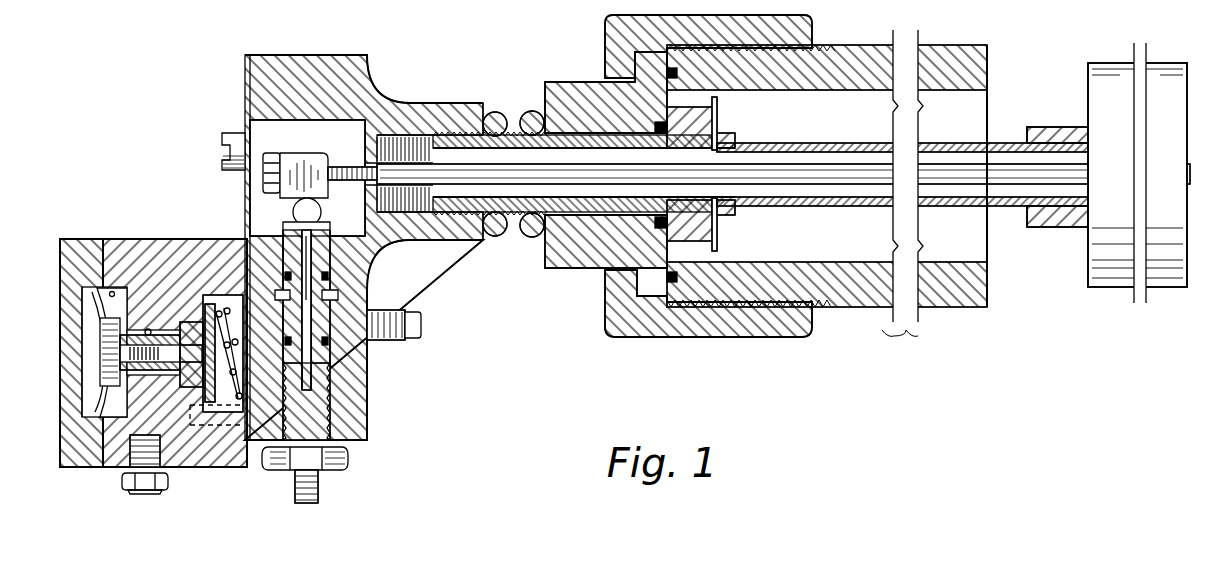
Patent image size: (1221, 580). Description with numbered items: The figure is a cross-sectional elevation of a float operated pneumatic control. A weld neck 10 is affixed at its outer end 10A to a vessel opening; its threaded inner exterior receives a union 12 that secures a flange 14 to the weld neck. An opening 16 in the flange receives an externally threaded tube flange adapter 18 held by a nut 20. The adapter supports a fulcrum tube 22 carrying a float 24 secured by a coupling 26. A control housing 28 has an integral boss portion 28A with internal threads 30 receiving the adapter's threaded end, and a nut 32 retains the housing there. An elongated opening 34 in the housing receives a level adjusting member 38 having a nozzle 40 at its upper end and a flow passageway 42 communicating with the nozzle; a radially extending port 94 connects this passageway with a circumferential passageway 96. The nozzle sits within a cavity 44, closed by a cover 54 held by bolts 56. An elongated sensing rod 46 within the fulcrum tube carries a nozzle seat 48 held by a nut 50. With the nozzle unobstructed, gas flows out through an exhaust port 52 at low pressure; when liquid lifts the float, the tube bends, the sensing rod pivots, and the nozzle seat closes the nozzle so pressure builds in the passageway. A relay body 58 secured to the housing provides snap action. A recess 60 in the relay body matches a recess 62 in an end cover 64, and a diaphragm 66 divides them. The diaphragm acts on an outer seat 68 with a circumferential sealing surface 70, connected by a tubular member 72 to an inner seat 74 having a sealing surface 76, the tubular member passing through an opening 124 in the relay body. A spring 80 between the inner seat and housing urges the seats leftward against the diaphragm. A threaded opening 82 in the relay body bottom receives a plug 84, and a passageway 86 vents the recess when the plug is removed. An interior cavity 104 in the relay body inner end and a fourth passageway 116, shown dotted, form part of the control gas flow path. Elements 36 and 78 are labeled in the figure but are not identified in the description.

The weld neck 10 is at (871, 299).
The outer end of weld neck 10A is at (990, 300).
The union 12 is at (702, 326).
The flange 14 is at (548, 268).
The opening 16 is at (590, 218).
The tube flange adapter 18 is at (531, 238).
The nut 20 is at (528, 112).
The fulcrum tube 22 is at (830, 207).
The float 24 is at (1112, 65).
The coupling 26 is at (1047, 126).
The control housing 28 is at (372, 382).
The boss portion 28A is at (442, 108).
The internal threads 30 is at (455, 226).
The nut 32 is at (496, 238).
The elongated opening 34 is at (330, 256).
The lock nut 36 is at (350, 452).
The level adjusting member 38 is at (333, 412).
The nozzle 40 is at (283, 229).
The flow passageway 42 is at (312, 352).
The cavity 44 is at (262, 128).
The sensing rod 46 is at (823, 166).
The nozzle seat 48 is at (305, 162).
The nut 50 is at (264, 173).
The exhaust port 52 is at (294, 212).
The cover 54 is at (246, 72).
The bolts 56 is at (224, 142).
The relay body 58 is at (123, 244).
The recess 60 is at (100, 405).
The recess 62 is at (86, 300).
The end cover 64 is at (75, 405).
The diaphragm 66 is at (100, 251).
The outer seat 68 is at (108, 330).
The circumferential sealing surface 70 is at (112, 292).
The tubular member 72 is at (153, 368).
The inner seat 74 is at (173, 330).
The circumferential sealing surface 76 is at (186, 392).
The spring 78 is at (140, 350).
The spring 80 is at (232, 300).
The threaded opening 82 is at (136, 489).
The plug 84 is at (150, 492).
The passageway 86 is at (130, 445).
The radially extending port 94 is at (335, 238).
The circumferential passageway 96 is at (395, 309).
The interior cavity 104 is at (249, 446).
The fourth passageway 116 is at (214, 428).
The opening 124 is at (148, 328).